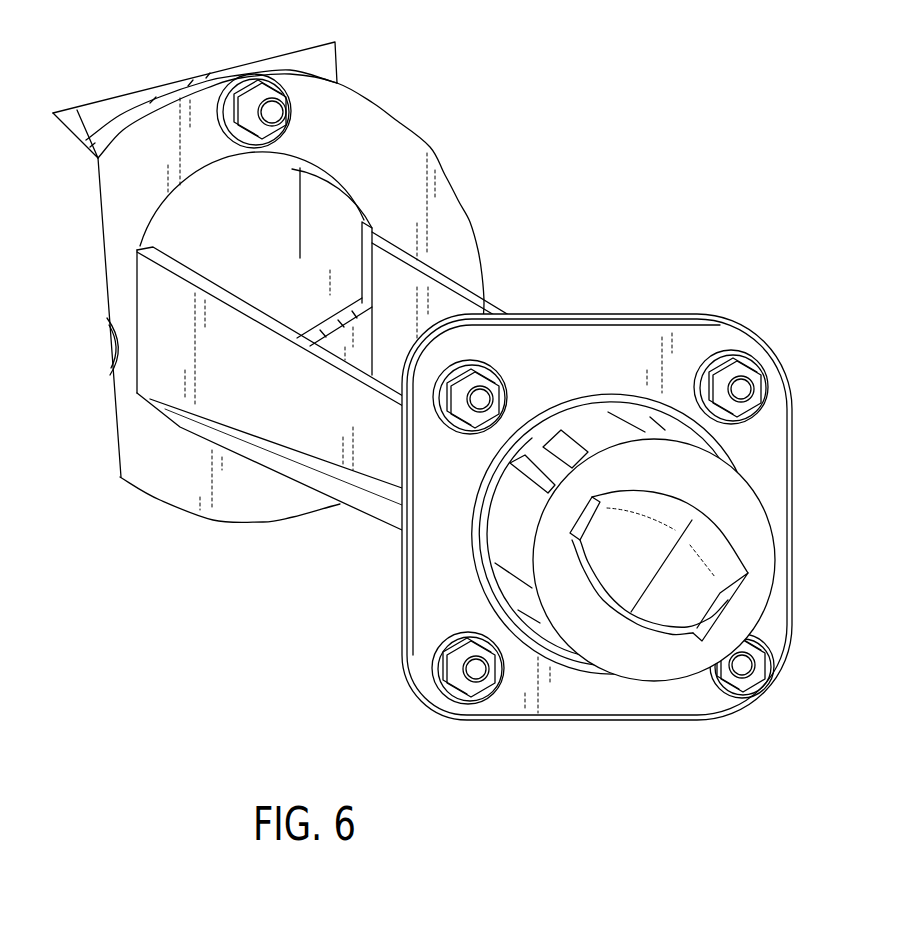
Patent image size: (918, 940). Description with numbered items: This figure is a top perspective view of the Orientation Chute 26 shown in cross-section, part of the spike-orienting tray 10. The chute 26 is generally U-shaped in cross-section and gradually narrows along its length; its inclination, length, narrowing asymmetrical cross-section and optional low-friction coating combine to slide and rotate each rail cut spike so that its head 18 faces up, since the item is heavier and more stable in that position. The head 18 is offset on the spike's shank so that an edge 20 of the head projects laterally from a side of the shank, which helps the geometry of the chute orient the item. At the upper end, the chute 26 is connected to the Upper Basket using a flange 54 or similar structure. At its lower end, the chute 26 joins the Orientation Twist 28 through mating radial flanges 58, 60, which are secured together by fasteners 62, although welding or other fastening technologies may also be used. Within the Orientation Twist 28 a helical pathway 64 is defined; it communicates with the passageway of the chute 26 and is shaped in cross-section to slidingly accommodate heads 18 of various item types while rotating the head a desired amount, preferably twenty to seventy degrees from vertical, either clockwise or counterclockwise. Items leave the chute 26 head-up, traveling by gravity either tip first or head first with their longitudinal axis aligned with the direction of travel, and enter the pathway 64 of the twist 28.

The tray 10 is at (541, 76).
The head 18 is at (703, 588).
The edge 20 is at (570, 540).
The Orientation Chute 26 is at (326, 443).
The Orientation Twist 28 is at (527, 741).
The flange 54 is at (393, 138).
The radial flange 58 is at (531, 317).
The radial flange 60 is at (425, 570).
The fasteners 62 is at (275, 110).
The helical pathway 64 is at (700, 640).